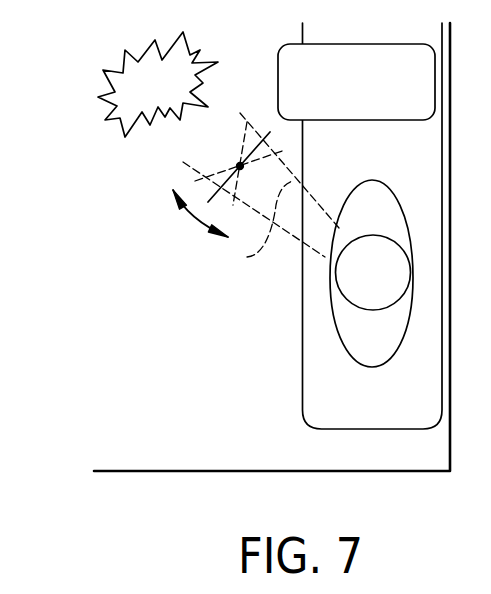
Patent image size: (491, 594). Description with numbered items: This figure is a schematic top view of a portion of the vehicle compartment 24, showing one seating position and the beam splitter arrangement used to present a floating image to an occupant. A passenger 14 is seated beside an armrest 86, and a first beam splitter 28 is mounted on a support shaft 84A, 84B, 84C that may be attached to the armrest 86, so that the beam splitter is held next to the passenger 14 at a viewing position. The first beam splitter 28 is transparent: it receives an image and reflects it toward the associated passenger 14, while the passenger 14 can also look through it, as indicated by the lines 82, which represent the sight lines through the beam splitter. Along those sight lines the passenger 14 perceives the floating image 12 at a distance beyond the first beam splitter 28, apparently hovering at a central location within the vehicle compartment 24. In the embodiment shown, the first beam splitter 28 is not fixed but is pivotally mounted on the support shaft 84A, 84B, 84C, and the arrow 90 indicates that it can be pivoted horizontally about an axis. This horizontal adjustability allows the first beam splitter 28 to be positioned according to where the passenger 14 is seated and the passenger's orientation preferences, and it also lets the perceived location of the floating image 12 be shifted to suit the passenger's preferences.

The floating image 12 is at (171, 98).
The passenger 14 is at (388, 344).
The vehicle compartment 24 is at (389, 485).
The first beam splitter 28 is at (270, 132).
The lines 82 is at (247, 257).
The support shaft 84A is at (240, 166).
The support shaft 84B is at (254, 189).
The support shaft 84C is at (289, 170).
The armrest 86 is at (373, 95).
The arrow 90 is at (190, 219).